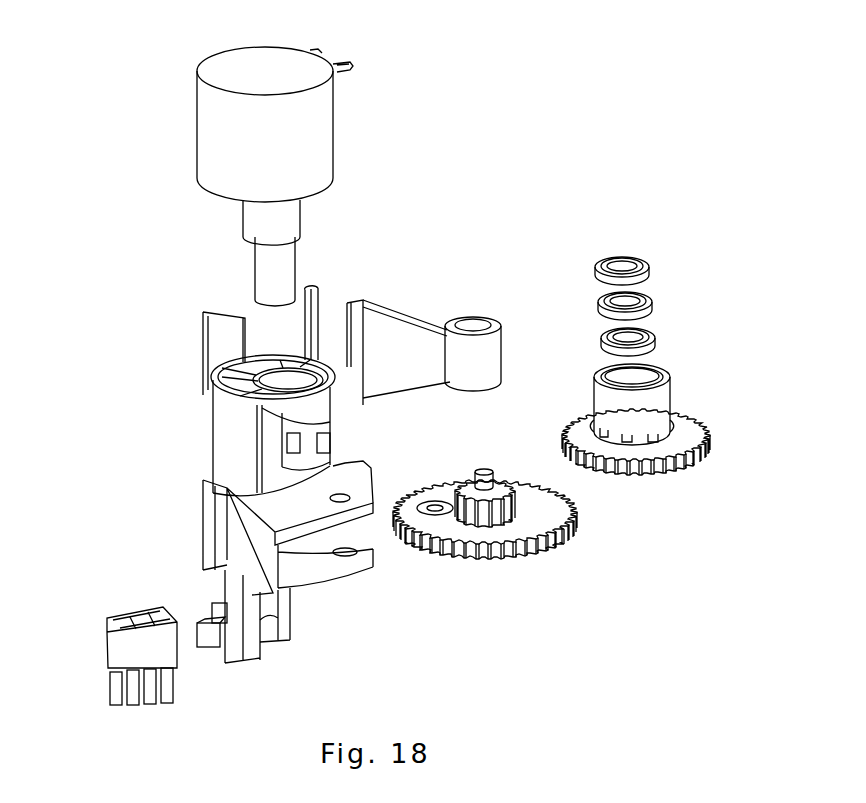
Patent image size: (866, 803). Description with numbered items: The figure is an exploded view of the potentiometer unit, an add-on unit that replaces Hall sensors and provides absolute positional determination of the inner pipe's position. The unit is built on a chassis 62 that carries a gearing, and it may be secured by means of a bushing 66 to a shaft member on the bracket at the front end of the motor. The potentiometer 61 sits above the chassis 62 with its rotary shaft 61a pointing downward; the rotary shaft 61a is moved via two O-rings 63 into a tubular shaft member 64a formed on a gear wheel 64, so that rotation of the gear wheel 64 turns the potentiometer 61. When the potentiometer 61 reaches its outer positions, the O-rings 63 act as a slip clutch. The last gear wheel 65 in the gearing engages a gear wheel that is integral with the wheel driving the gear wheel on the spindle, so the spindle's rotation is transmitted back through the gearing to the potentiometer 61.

The potentiometer 61 is at (212, 130).
The rotary shaft 61a is at (258, 267).
The chassis 62 is at (215, 350).
The O-rings 63 is at (652, 300).
The gear wheel 64 is at (688, 420).
The tubular shaft member 64a is at (662, 365).
The last gear wheel 65 is at (577, 522).
The bushing 66 is at (480, 313).